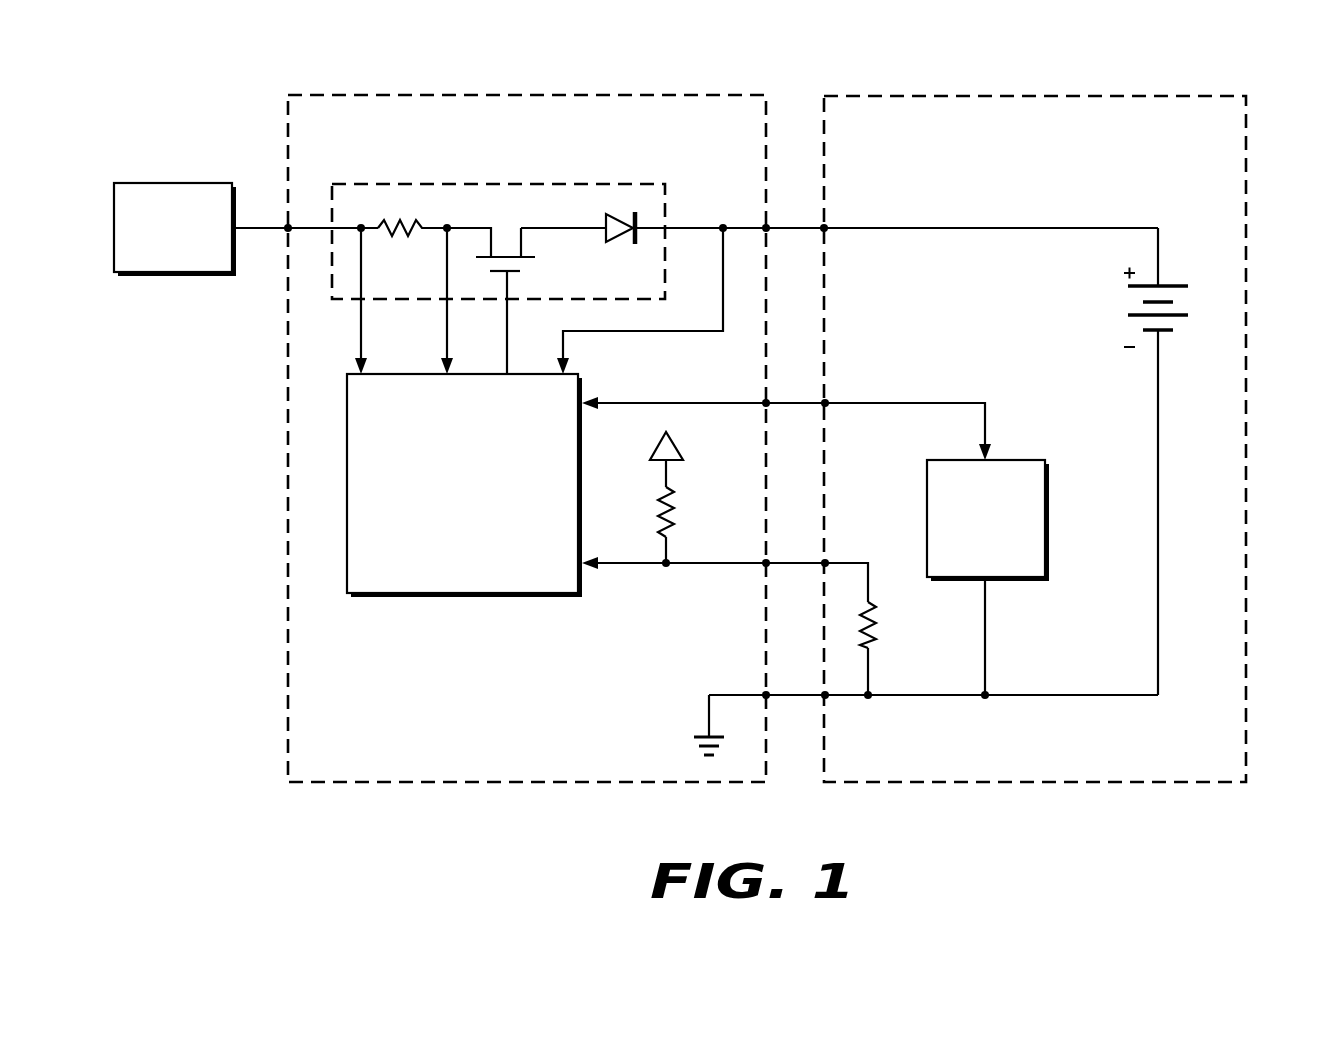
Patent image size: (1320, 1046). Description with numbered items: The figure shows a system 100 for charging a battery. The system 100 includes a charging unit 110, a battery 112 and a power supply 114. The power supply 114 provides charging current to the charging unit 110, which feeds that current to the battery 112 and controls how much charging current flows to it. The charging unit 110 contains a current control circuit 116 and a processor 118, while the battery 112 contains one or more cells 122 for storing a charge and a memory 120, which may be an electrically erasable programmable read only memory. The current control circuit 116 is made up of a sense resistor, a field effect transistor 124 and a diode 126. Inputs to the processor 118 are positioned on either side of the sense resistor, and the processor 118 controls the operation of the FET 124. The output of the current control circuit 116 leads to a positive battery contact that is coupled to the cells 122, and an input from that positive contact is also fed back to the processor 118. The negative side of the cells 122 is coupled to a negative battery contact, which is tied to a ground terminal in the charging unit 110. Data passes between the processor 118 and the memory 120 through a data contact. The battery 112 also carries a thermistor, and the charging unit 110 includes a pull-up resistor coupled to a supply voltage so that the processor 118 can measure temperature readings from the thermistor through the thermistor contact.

The system 100 is at (1020, 855).
The charging unit 110 is at (541, 86).
The battery 112 is at (851, 87).
The power supply 114 is at (116, 182).
The current control circuit 116 is at (527, 249).
The processor 118 is at (348, 594).
The memory 120 is at (1046, 458).
The cells 122 is at (1176, 283).
The field effect transistor (FET) 124 is at (518, 223).
The diode 126 is at (613, 212).